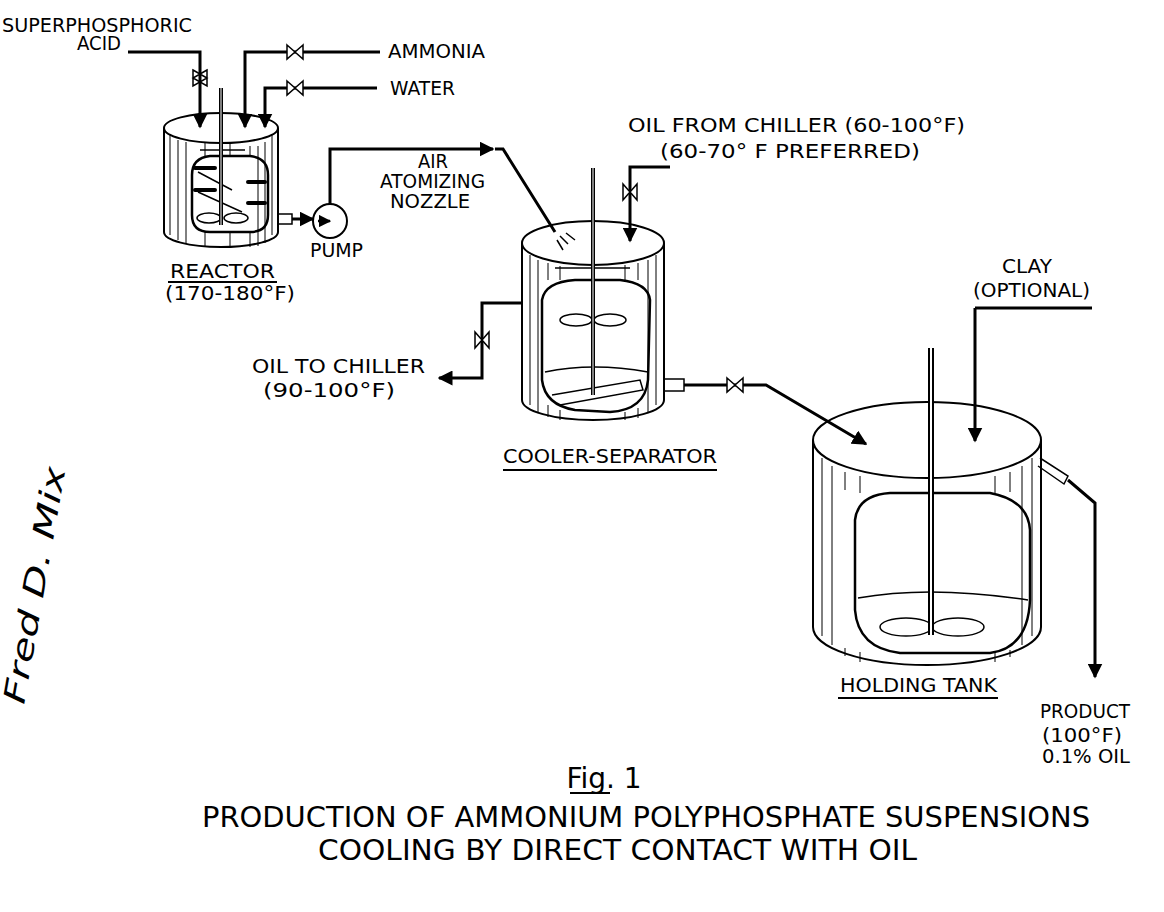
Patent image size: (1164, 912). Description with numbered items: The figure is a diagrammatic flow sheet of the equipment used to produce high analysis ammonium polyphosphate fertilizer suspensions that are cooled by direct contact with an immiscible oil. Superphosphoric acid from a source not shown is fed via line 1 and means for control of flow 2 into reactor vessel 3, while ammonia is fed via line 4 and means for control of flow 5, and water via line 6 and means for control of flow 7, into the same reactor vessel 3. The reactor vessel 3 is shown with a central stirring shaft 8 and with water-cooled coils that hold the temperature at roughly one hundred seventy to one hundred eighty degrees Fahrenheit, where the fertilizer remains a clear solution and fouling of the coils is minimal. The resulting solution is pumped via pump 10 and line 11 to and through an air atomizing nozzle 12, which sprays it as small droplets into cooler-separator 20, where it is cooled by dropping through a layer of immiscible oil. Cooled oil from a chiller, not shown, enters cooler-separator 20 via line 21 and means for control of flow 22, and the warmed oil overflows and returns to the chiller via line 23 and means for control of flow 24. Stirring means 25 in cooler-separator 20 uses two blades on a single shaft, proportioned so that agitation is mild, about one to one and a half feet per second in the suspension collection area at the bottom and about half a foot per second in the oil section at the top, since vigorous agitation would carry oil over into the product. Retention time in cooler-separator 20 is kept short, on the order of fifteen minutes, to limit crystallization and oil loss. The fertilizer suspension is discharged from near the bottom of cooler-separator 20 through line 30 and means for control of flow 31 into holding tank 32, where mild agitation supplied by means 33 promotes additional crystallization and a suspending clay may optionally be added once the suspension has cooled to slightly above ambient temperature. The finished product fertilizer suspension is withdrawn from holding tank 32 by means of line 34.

The line 1 is at (200, 60).
The means for control of flow 2 is at (194, 82).
The reactor vessel 3 is at (164, 200).
The line 4 is at (352, 52).
The means for control of flow 5 is at (290, 46).
The line 6 is at (330, 92).
The means for control of flow 7 is at (291, 94).
The reactor agitator shaft 8 is at (226, 88).
The pump 10 is at (347, 222).
The line 11 is at (412, 148).
The atomizing nozzle 12 is at (498, 146).
The cooler-separator 20 is at (665, 285).
The line 21 is at (634, 216).
The means for control of flow 22 is at (636, 192).
The line 23 is at (482, 307).
The means for control of flow 24 is at (476, 342).
The stirring means 25 is at (580, 178).
The line 30 is at (712, 362).
The means for control of flow 31 is at (768, 352).
The holding tank 32 is at (813, 573).
The means for agitation 33 is at (922, 378).
The line 34 is at (1088, 470).